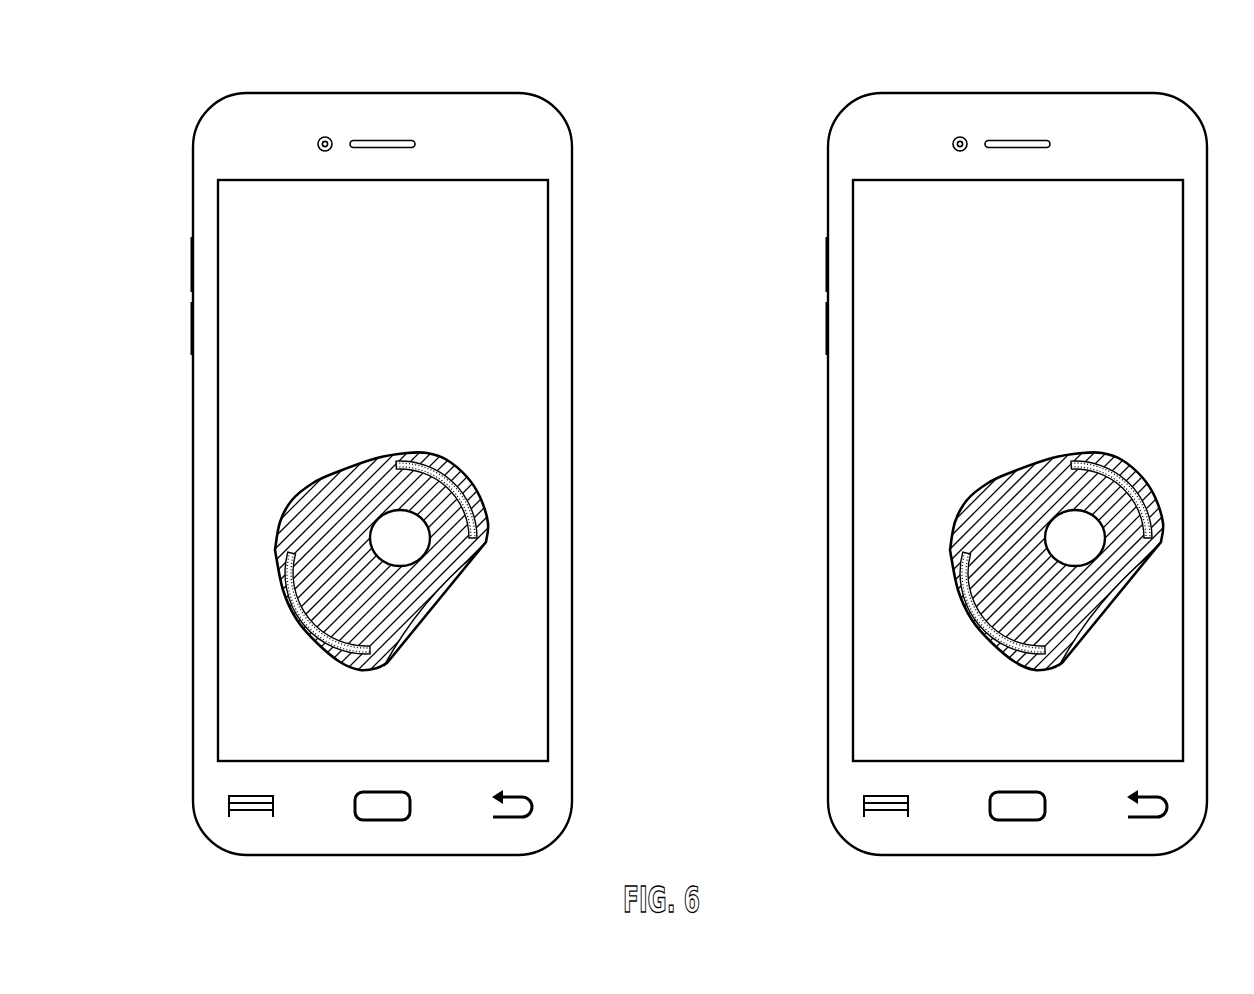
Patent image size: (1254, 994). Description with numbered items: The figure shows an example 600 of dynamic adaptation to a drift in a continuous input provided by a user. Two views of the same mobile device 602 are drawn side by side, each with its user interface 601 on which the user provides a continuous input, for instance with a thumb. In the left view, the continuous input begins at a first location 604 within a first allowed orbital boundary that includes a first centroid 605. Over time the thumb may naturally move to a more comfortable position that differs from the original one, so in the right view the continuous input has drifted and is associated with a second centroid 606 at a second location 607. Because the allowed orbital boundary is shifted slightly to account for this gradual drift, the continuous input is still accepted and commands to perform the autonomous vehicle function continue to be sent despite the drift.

The example of dynamic adaptation to a drift in a continuous input 600 is at (172, 62).
The user interface 601 is at (237, 237).
The mobile device 602 is at (208, 113).
The first location 604 is at (310, 542).
The first centroid 605 is at (395, 522).
The second centroid 606 is at (1073, 522).
The second location 607 is at (968, 530).